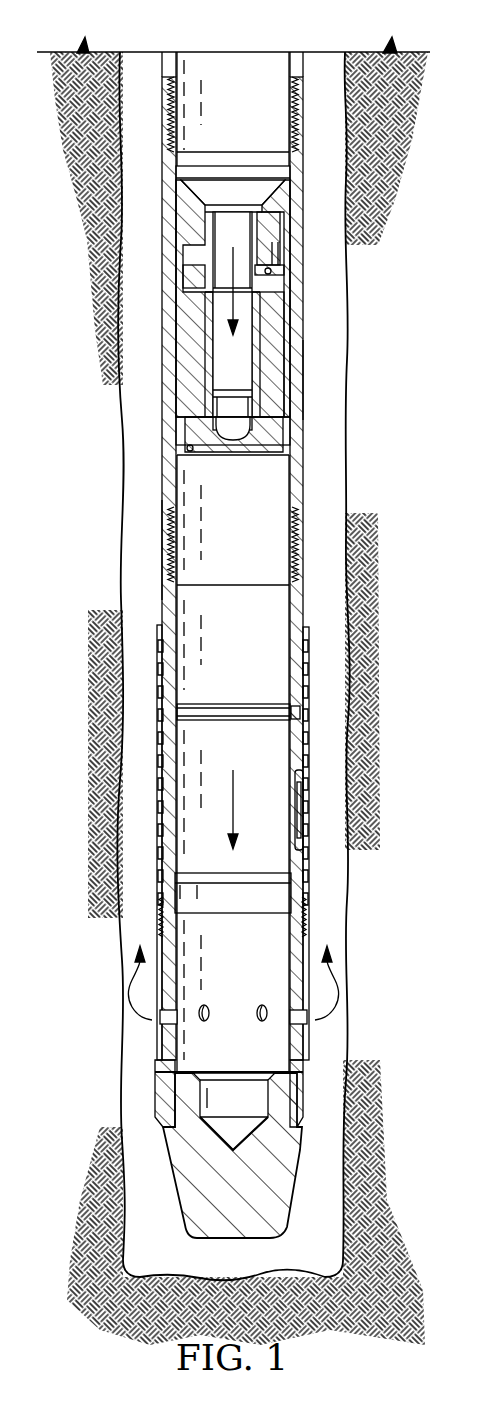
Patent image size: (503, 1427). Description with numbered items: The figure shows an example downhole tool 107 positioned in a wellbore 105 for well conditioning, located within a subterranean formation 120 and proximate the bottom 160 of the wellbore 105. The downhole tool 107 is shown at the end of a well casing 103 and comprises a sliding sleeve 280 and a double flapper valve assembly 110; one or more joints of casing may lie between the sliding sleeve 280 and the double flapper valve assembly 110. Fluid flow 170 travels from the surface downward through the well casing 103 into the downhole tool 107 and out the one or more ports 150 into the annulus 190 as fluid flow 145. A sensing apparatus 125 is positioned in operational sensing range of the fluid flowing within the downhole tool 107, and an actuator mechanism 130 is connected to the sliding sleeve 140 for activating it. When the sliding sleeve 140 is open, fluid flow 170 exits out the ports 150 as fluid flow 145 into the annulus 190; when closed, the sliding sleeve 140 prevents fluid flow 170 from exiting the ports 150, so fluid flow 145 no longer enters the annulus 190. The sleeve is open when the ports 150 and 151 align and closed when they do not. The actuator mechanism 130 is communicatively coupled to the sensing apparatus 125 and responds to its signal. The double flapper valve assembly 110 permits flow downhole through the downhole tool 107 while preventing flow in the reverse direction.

The well casing 103 is at (288, 68).
The wellbore 105 is at (343, 80).
The downhole tool 107 is at (330, 376).
The double flapper valve assembly 110 is at (180, 363).
The subterranean formation 120 is at (393, 1318).
The sensing apparatus 125 is at (290, 710).
The actuator mechanism 130 is at (307, 812).
The sliding sleeve 140 is at (172, 1038).
The fluid flow 145 is at (146, 978).
The ports 150 is at (262, 1005).
The ports 151 is at (165, 1018).
The bottom 160 is at (318, 1276).
The fluid flow 170 is at (205, 270).
The annulus 190 is at (142, 553).
The sliding sleeve 280 is at (302, 1068).